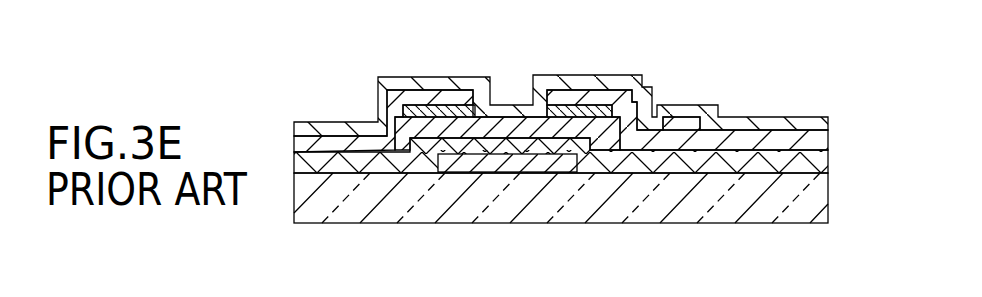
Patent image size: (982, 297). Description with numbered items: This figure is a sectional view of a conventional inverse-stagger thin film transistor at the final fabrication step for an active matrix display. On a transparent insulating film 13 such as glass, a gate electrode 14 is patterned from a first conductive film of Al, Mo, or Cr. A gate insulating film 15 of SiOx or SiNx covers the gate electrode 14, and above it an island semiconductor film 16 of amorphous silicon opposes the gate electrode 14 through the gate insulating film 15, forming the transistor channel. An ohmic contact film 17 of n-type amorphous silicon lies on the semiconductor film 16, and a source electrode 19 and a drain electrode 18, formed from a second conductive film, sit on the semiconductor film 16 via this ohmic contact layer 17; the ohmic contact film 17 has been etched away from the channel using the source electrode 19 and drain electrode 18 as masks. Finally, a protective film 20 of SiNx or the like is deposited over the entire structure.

The transparent insulating film 13 is at (830, 186).
The gate electrode 14 is at (458, 158).
The gate insulating film 15 is at (666, 155).
The semiconductor film 16 is at (647, 115).
The ohmic contact film 17 is at (603, 102).
The drain electrode 18 is at (437, 94).
The source electrode 19 is at (567, 95).
The protective film 20 is at (765, 127).